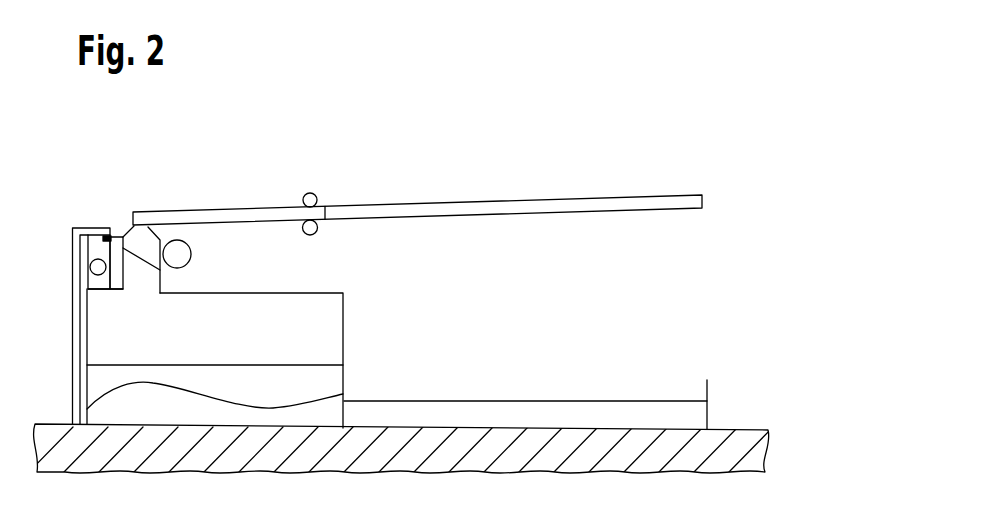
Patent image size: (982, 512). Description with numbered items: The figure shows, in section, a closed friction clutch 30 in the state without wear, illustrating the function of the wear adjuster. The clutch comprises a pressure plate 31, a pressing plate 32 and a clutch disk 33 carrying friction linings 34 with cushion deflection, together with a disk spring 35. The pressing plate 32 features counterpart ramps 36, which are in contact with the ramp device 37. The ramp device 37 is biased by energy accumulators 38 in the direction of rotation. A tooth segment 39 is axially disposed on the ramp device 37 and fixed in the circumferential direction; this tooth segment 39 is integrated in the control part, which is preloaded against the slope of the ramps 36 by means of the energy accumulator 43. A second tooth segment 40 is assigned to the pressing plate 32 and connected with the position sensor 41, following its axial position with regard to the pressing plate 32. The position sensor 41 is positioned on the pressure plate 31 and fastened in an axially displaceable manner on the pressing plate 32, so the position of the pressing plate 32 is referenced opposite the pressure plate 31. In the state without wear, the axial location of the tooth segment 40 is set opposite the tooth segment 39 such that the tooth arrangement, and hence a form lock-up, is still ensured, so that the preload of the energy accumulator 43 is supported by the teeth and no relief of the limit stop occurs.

The friction clutch 30 is at (445, 162).
The pressure plate 31 is at (463, 448).
The pressing plate 32 is at (333, 330).
The clutch disk 33 is at (593, 401).
The friction linings 34 is at (340, 394).
The disk spring 35 is at (558, 208).
The counterpart ramps 36 is at (152, 281).
The ramp device 37 is at (148, 243).
The energy accumulators 38 is at (173, 253).
The tooth segment 39 is at (120, 236).
The tooth segment 40 is at (98, 234).
The position sensor 41 is at (78, 350).
The energy accumulator 43 is at (91, 266).